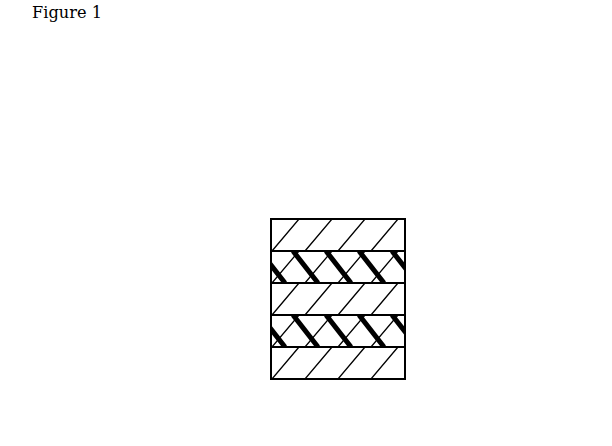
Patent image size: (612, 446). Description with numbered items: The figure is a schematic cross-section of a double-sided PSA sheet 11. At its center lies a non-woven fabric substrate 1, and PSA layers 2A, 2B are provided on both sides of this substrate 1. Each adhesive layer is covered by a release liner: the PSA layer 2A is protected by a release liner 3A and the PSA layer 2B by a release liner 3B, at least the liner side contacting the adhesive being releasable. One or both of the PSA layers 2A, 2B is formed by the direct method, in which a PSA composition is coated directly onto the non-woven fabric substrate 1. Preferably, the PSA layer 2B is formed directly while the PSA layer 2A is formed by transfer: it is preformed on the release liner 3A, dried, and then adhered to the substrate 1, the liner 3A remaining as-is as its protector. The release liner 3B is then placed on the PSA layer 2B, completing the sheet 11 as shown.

The double-sided PSA sheet 11 is at (380, 177).
The non-woven fabric substrate 1 is at (405, 300).
The PSA layer 2A is at (405, 332).
The PSA layer 2B is at (405, 268).
The release liner 3A is at (405, 365).
The release liner 3B is at (405, 233).